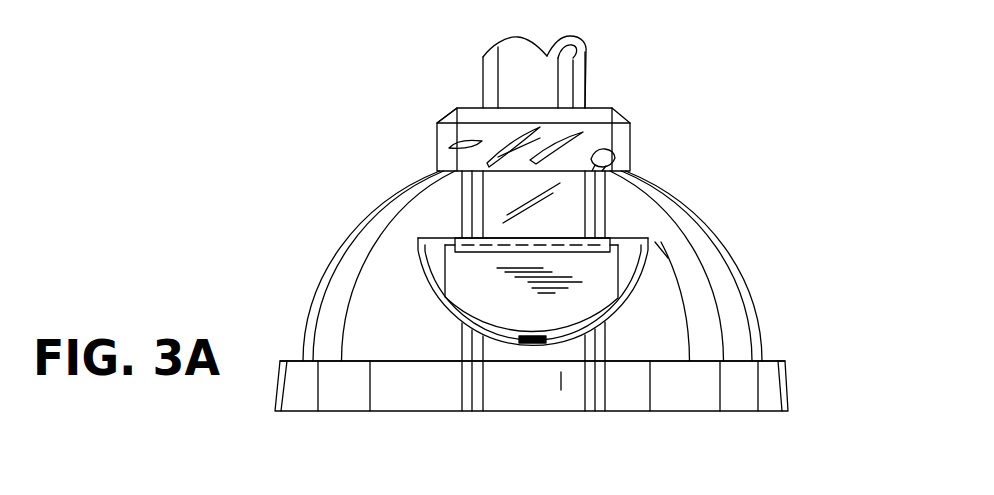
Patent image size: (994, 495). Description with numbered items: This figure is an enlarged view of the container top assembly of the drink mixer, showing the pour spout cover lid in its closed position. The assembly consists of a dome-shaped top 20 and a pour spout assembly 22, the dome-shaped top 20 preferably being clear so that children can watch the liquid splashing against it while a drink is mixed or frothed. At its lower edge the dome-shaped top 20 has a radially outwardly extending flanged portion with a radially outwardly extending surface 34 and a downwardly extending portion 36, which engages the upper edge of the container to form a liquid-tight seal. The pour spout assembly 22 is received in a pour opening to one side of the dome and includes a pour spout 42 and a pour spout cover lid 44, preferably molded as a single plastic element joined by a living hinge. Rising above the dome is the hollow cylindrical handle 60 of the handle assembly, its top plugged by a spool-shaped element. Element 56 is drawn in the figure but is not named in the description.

The dome 20 is at (723, 282).
The light assembly 22 is at (407, 252).
The base top flange 34 is at (770, 358).
The base 36 is at (790, 383).
The plate 42 is at (637, 248).
The reservoir cup 44 is at (465, 281).
The support post 56 is at (607, 246).
The stem loop 60 is at (577, 78).